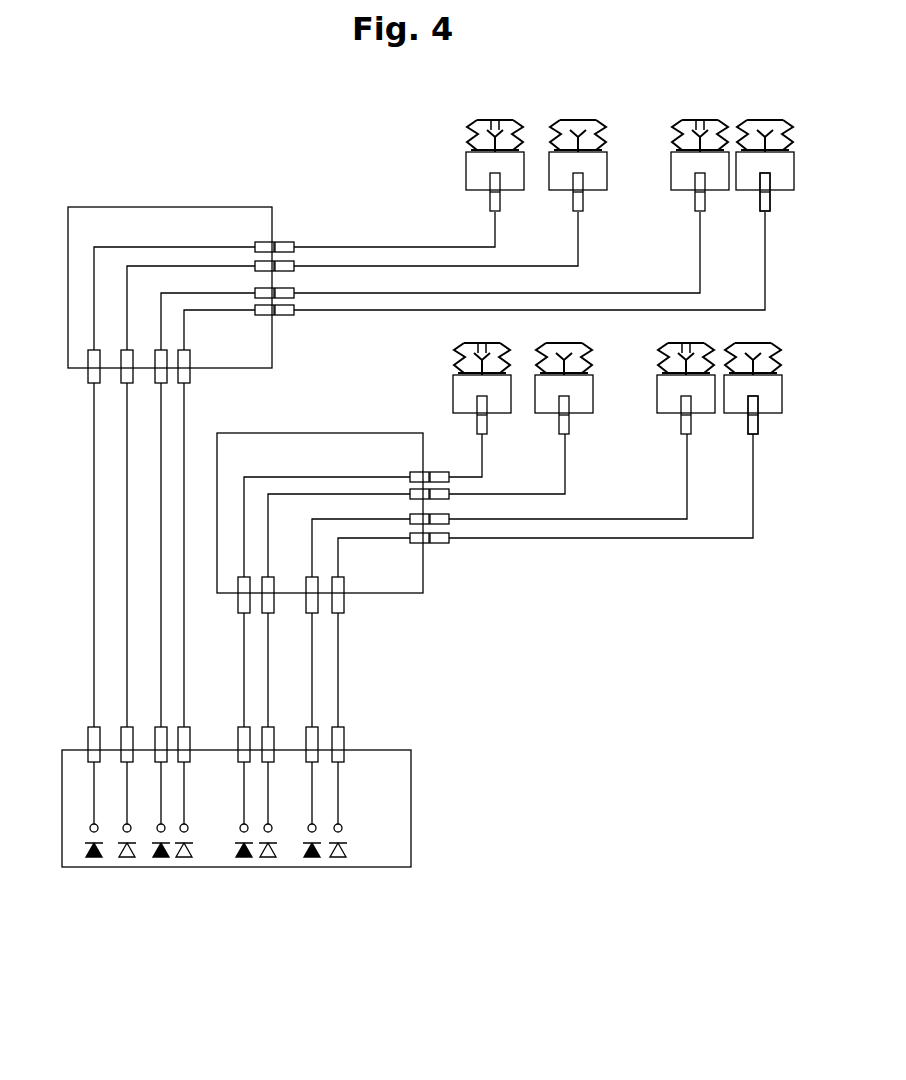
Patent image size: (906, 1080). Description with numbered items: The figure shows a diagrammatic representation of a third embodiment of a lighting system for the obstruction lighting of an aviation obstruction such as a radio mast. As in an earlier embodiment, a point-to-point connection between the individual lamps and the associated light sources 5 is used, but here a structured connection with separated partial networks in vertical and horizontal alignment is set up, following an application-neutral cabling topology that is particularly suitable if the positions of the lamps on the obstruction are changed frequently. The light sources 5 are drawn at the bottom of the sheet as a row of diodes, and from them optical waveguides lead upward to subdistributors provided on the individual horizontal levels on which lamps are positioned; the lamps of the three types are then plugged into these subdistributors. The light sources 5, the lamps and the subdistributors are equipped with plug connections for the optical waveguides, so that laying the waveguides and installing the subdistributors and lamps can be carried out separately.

The light source 5 is at (94, 858).